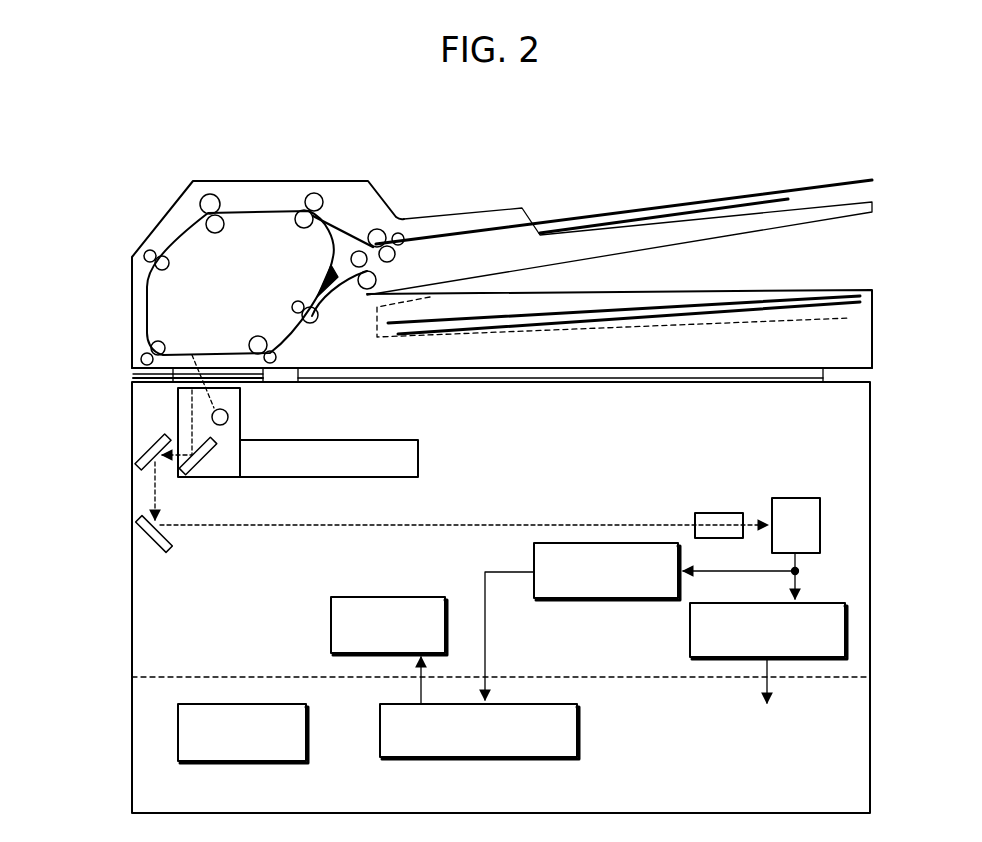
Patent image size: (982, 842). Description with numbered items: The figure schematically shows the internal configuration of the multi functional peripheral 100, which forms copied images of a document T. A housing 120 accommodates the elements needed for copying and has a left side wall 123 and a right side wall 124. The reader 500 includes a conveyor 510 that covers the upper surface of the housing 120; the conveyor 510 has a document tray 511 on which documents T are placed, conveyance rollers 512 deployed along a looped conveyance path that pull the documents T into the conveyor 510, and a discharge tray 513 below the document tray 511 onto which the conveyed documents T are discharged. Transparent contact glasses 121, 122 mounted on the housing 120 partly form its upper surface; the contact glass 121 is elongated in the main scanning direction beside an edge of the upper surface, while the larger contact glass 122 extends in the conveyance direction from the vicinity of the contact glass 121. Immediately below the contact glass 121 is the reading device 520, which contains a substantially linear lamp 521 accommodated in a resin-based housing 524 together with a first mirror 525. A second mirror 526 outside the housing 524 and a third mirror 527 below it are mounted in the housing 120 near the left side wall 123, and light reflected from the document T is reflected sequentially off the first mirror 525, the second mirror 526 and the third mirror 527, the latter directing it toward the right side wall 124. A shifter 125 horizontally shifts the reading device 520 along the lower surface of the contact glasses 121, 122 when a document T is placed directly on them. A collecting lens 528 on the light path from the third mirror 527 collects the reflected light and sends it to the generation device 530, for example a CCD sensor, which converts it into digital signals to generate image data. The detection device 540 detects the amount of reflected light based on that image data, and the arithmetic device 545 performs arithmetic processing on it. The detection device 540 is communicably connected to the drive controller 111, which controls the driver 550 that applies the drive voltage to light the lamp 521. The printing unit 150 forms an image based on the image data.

The multi functional peripheral 100 is at (750, 85).
The drive controller 111 is at (548, 760).
The housing 120 is at (871, 783).
The contact glass 121 is at (253, 383).
The contact glass 122 is at (648, 383).
The left side wall 123 is at (131, 650).
The right side wall 124 is at (871, 578).
The shifter 125 is at (418, 450).
The printing unit 150 is at (275, 763).
The reader 500 is at (880, 297).
The conveyor 510 is at (144, 223).
The document tray 511 is at (877, 202).
The conveyance rollers 512 is at (208, 194).
The discharge tray 513 is at (850, 318).
The reading device 520 is at (177, 402).
The lamp 521 is at (232, 422).
The housing 524 is at (177, 420).
The first mirror 525 is at (204, 463).
The second mirror 526 is at (143, 460).
The third mirror 527 is at (150, 540).
The collecting lens 528 is at (713, 513).
The generation device 530 is at (790, 498).
The detection device 540 is at (533, 550).
The arithmetic device 545 is at (689, 641).
The driver 550 is at (330, 612).
The document T is at (776, 186).